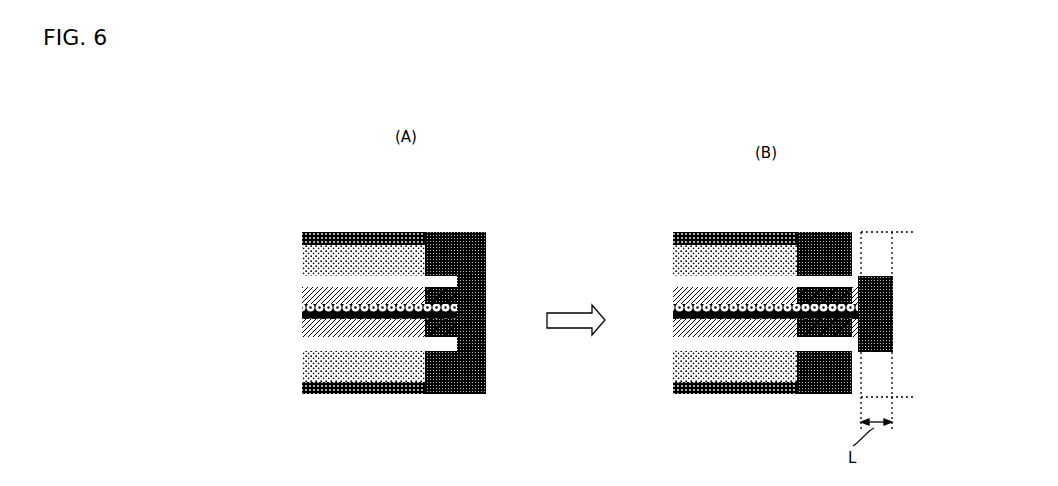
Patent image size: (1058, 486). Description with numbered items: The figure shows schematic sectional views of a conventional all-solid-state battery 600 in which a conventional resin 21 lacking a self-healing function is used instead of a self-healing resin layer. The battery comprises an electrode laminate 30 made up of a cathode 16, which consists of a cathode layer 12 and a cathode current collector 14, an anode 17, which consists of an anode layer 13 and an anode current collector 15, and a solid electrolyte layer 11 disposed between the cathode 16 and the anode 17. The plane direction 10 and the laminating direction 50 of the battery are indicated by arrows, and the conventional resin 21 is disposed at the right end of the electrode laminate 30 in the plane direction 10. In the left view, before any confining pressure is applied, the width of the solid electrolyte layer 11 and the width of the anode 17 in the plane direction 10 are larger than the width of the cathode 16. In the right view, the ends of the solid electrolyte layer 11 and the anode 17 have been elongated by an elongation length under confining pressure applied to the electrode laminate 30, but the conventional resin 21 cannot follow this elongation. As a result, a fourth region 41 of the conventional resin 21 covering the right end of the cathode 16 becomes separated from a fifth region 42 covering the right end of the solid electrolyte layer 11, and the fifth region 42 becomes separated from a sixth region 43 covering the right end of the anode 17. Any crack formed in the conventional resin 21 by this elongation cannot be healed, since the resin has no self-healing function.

The all-solid-state battery 600 is at (303, 133).
The plane direction 10 is at (311, 442).
The solid electrolyte layer 11 is at (302, 279).
The cathode layer 12 is at (302, 250).
The anode layer 13 is at (302, 298).
The cathode current collector 14 is at (302, 239).
The anode current collector 15 is at (302, 320).
The cathode 16 is at (178, 170).
The anode 17 is at (178, 290).
The conventional resin 21 is at (448, 232).
The electrode laminate 30 is at (104, 192).
The fourth region 41 is at (902, 232).
The fifth region 42 is at (902, 276).
The sixth region 43 is at (902, 290).
The laminating direction 50 is at (527, 394).